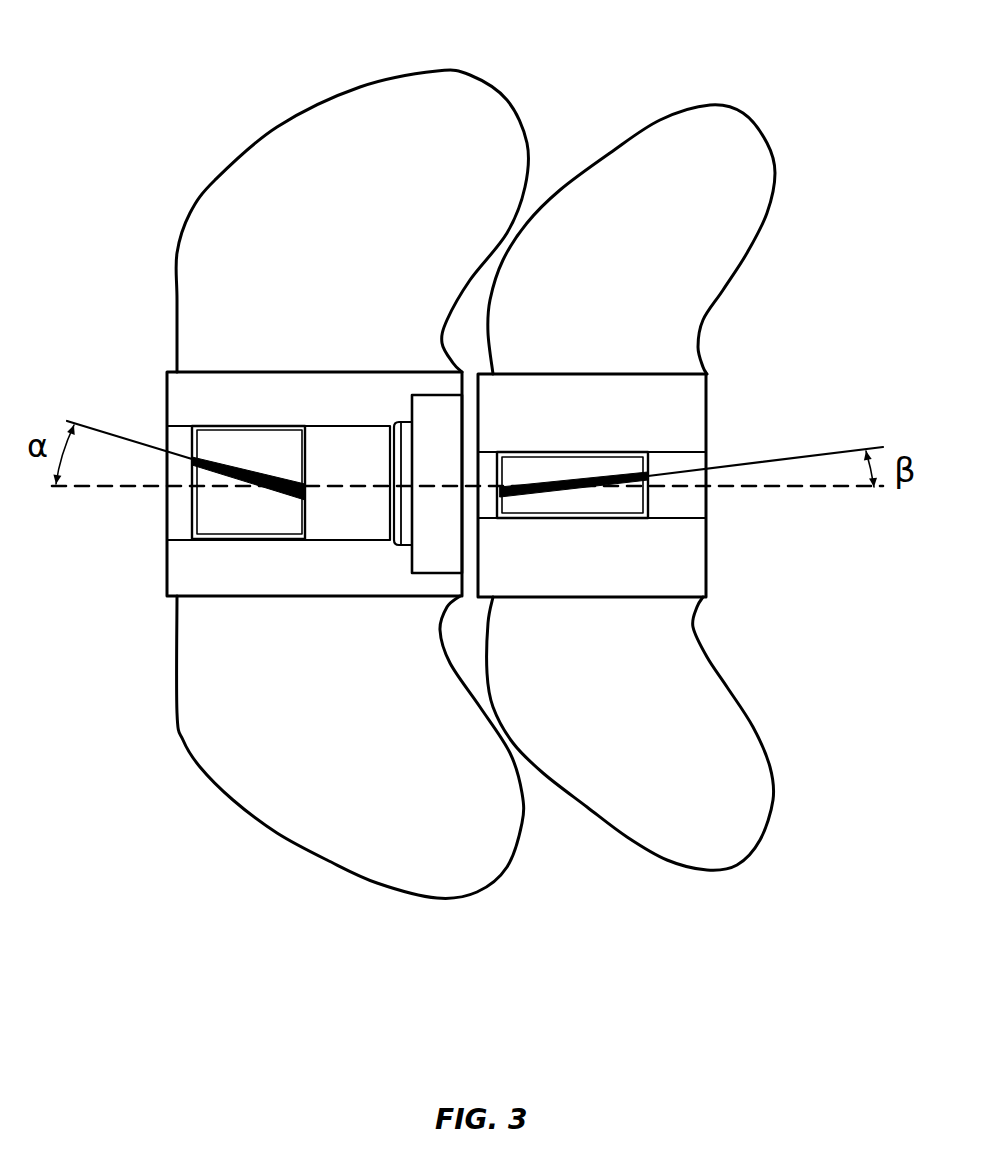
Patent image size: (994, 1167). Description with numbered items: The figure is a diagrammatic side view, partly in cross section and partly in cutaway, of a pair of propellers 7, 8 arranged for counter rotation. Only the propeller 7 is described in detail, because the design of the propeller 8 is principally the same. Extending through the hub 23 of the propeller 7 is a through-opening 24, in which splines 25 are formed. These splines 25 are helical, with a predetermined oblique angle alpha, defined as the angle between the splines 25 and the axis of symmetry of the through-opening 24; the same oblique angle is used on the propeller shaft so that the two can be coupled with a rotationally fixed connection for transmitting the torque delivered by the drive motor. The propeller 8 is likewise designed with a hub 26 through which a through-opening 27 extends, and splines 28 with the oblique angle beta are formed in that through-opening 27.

The propeller 7 is at (487, 52).
The propeller 8 is at (737, 90).
The hub 23 is at (173, 390).
The through-opening 24 is at (173, 448).
The splines 25 is at (257, 487).
The hub 26 is at (699, 415).
The through-opening 27 is at (699, 467).
The splines 28 is at (582, 492).